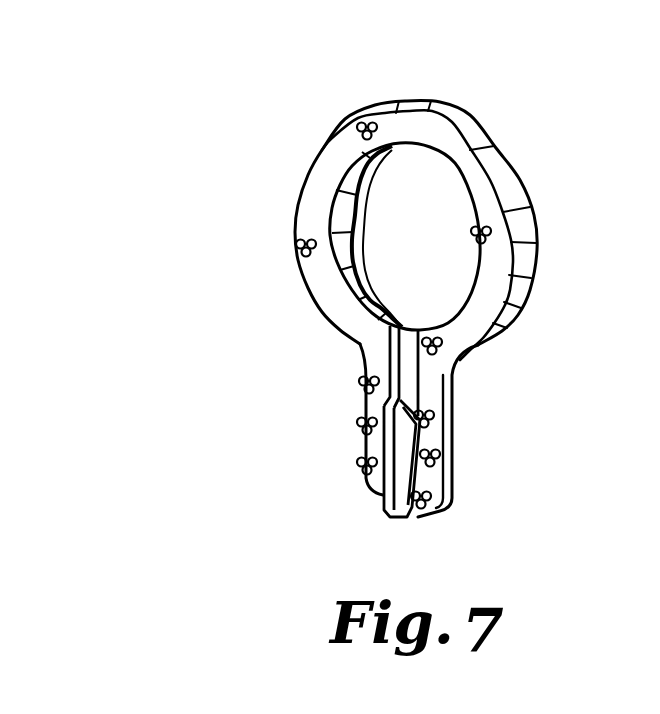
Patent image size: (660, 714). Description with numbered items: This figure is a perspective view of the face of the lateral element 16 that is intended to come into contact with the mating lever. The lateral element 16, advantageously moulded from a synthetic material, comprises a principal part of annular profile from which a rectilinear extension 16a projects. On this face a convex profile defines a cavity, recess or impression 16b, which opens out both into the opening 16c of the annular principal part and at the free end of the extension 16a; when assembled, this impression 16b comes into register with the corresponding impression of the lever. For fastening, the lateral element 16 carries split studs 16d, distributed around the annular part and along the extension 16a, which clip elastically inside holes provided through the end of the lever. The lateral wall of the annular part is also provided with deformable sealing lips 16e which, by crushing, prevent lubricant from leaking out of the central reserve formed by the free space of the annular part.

The lateral element 16 is at (315, 187).
The rectilinear extension 16a is at (430, 481).
The impression 16b is at (418, 375).
The opening 16c is at (438, 157).
The split studs 16d is at (488, 236).
The deformable sealing lips 16e is at (363, 215).